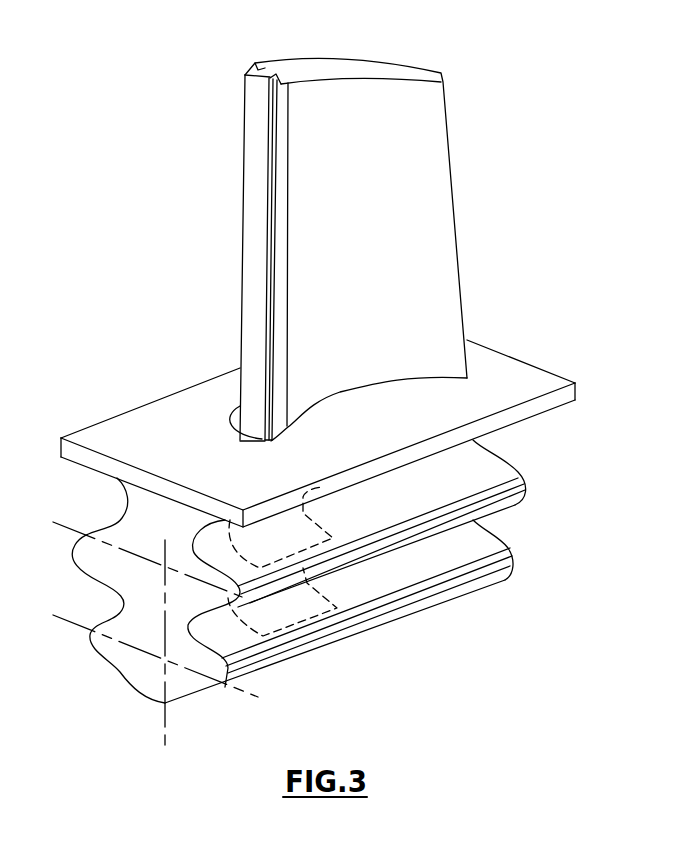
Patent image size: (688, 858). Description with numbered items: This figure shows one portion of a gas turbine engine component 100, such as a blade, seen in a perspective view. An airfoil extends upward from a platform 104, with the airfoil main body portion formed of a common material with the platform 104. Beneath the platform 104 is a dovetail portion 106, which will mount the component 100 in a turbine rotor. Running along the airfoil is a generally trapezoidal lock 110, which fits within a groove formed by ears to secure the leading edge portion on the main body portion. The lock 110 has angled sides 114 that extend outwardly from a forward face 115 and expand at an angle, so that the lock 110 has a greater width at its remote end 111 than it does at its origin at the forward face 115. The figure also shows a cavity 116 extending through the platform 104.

The component 100 is at (473, 170).
The platform 104 is at (108, 438).
The dovetail portion 106 is at (102, 535).
The trapezoidal lock 110 is at (253, 100).
The remote end 111 is at (249, 435).
The angled sides 114 is at (276, 88).
The forward face 115 is at (278, 205).
The cavity 116 is at (213, 417).